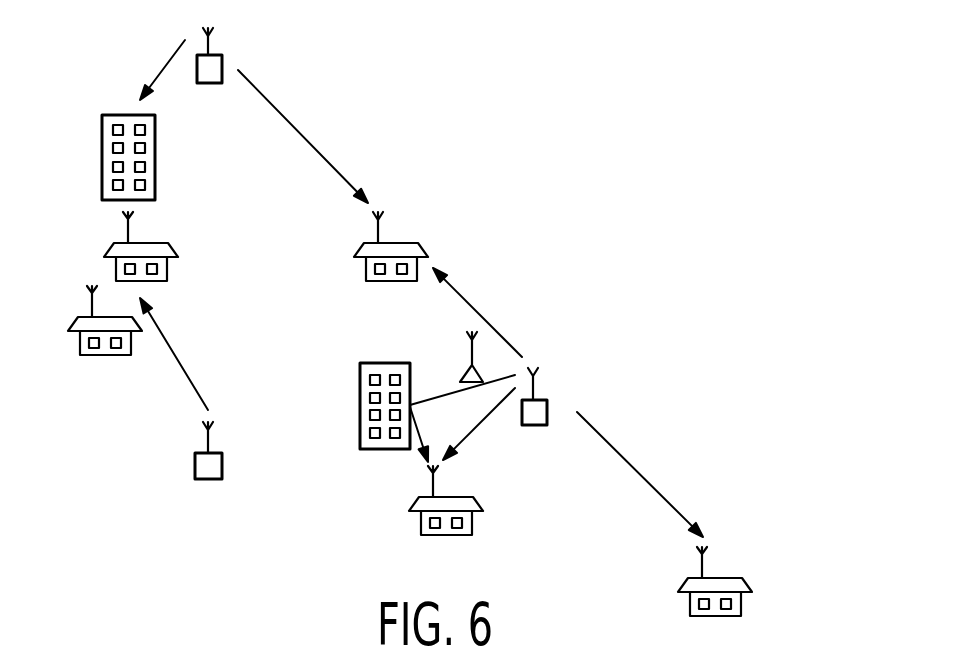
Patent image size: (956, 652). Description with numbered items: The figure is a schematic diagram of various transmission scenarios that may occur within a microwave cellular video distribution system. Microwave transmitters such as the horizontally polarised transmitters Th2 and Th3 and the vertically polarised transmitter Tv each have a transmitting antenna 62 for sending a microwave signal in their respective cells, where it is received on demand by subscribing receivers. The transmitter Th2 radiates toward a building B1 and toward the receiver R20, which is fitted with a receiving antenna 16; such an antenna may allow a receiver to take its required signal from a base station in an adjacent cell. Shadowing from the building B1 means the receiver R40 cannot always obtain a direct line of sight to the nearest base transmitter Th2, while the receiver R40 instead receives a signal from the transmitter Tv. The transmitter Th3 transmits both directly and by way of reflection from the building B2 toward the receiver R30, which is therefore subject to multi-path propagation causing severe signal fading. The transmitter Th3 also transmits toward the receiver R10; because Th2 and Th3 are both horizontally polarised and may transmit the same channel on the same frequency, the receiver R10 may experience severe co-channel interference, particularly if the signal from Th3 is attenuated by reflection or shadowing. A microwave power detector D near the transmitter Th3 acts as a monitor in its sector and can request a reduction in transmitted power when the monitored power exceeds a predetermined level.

The transmitting antenna 62 is at (215, 31).
The horizontally polarised transmitter Th2 is at (222, 62).
The building B1 is at (101, 157).
The subscriber receiver R40 is at (167, 275).
The receiving antenna 16 is at (384, 216).
The subscriber receiver R20 is at (370, 270).
The vertically polarised transmitter Tv is at (222, 468).
The building B2 is at (359, 405).
The microwave power detector D is at (466, 380).
The horizontally polarised transmitter Th3 is at (535, 425).
The subscriber receiver R30 is at (472, 528).
The subscriber receiver R10 is at (740, 610).